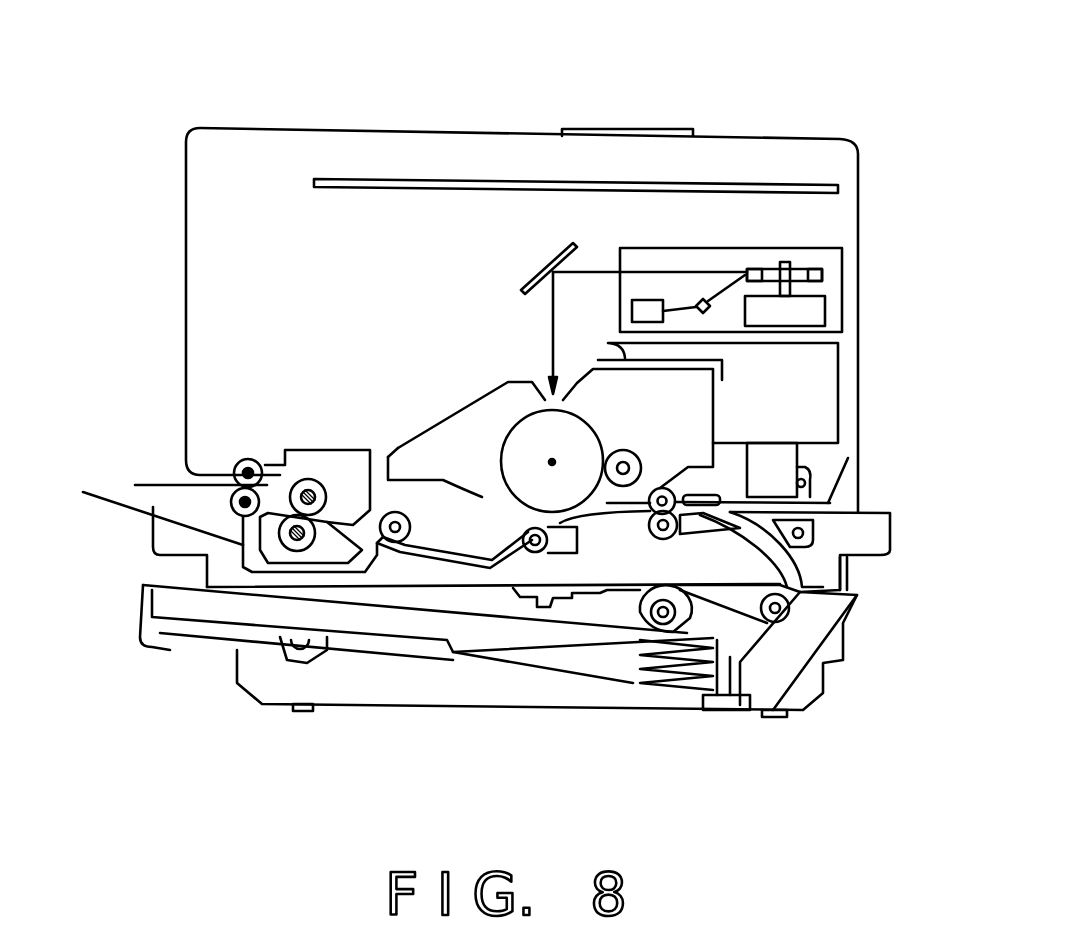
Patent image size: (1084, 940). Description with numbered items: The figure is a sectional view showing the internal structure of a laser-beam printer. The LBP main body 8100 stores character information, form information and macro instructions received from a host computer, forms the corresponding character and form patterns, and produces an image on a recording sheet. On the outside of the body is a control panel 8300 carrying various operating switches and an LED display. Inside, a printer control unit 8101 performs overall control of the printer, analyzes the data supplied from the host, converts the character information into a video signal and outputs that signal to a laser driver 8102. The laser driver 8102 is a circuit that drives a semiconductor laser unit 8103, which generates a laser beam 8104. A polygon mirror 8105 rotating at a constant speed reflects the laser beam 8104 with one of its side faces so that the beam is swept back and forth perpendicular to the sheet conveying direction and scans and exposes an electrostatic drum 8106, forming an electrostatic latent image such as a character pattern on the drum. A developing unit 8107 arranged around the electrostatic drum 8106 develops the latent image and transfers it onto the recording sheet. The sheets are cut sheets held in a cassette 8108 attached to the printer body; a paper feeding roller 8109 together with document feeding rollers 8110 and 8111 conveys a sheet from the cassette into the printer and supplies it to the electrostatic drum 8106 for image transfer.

The LBP main body 8100 is at (806, 141).
The control panel 8300 is at (648, 129).
The printer control unit 8101 is at (838, 189).
The laser driver 8102 is at (553, 311).
The semiconductor laser unit 8103 is at (706, 311).
The laser beam 8104 is at (717, 272).
The polygon mirror 8105 is at (822, 275).
The electrostatic drum 8106 is at (518, 422).
The developing unit 8107 is at (435, 450).
The cassette 8108 is at (142, 603).
The paper feeding roller 8109 is at (655, 632).
The document feeding roller 8110 is at (777, 613).
The document feeding roller 8111 is at (650, 534).